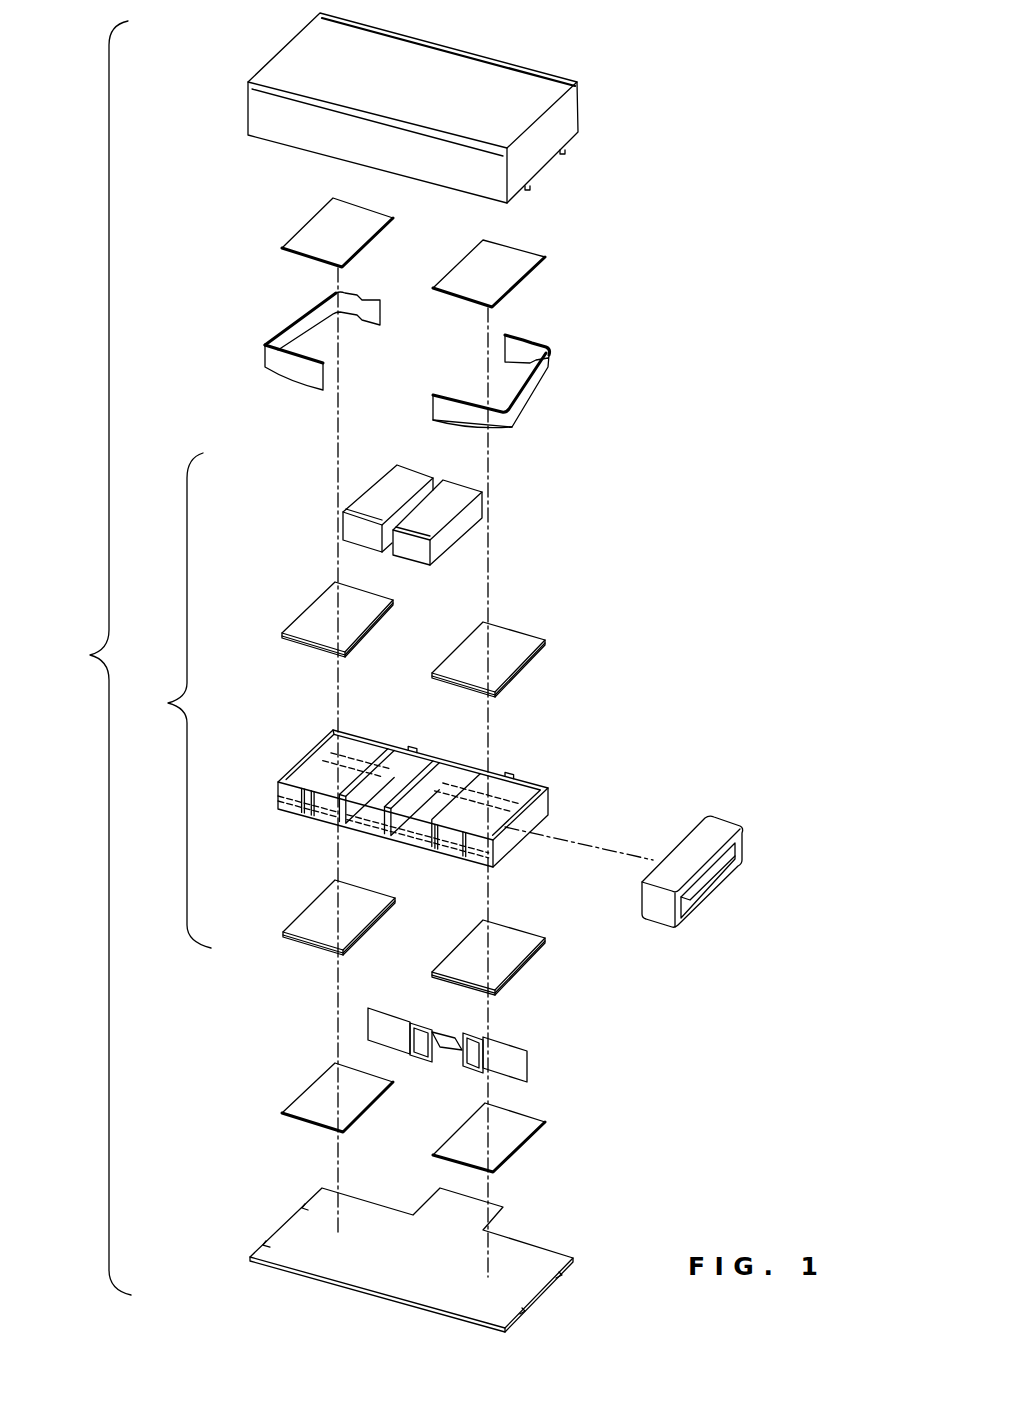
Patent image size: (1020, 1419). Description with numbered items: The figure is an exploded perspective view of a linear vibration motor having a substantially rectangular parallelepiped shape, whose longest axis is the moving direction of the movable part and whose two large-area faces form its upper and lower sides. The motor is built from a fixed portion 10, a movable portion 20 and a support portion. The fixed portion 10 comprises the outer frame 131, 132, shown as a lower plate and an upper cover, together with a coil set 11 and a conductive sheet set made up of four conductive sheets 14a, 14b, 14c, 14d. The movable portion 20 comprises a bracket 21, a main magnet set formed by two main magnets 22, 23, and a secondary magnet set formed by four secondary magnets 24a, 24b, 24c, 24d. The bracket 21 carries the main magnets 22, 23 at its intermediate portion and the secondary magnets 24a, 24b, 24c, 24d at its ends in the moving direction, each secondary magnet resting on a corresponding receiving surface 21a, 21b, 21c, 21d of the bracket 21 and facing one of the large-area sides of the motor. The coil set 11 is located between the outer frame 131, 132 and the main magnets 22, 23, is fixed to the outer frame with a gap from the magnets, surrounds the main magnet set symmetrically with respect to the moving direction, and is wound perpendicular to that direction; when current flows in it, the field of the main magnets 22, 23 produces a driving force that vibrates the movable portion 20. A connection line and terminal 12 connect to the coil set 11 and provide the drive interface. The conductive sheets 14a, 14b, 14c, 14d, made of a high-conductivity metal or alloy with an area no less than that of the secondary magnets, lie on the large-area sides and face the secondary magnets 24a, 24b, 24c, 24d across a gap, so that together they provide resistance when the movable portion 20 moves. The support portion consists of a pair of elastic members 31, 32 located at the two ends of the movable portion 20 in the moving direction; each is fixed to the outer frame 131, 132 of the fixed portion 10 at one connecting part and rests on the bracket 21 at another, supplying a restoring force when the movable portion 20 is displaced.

The fixed portion 10 is at (90, 658).
The movable portion 20 is at (170, 700).
The coil set 11 is at (718, 823).
The terminal 12 is at (375, 1029).
The outer frame 131 is at (532, 1252).
The outer frame 132 is at (575, 118).
The conductive sheet 14a is at (527, 268).
The conductive sheet 14b is at (527, 1132).
The conductive sheet 14c is at (308, 1092).
The conductive sheet 14d is at (307, 225).
The bracket 21 is at (277, 792).
The receiving surface 21a is at (513, 788).
The receiving surface 21b is at (515, 833).
The receiving surface 21c is at (322, 772).
The receiving surface 21d is at (358, 752).
The main magnet 22 is at (350, 528).
The main magnet 23 is at (478, 505).
The secondary magnet 24a is at (455, 655).
The secondary magnet 24b is at (455, 955).
The secondary magnet 24c is at (305, 912).
The secondary magnet 24d is at (305, 612).
The elastic member 31 is at (283, 343).
The elastic member 32 is at (550, 358).